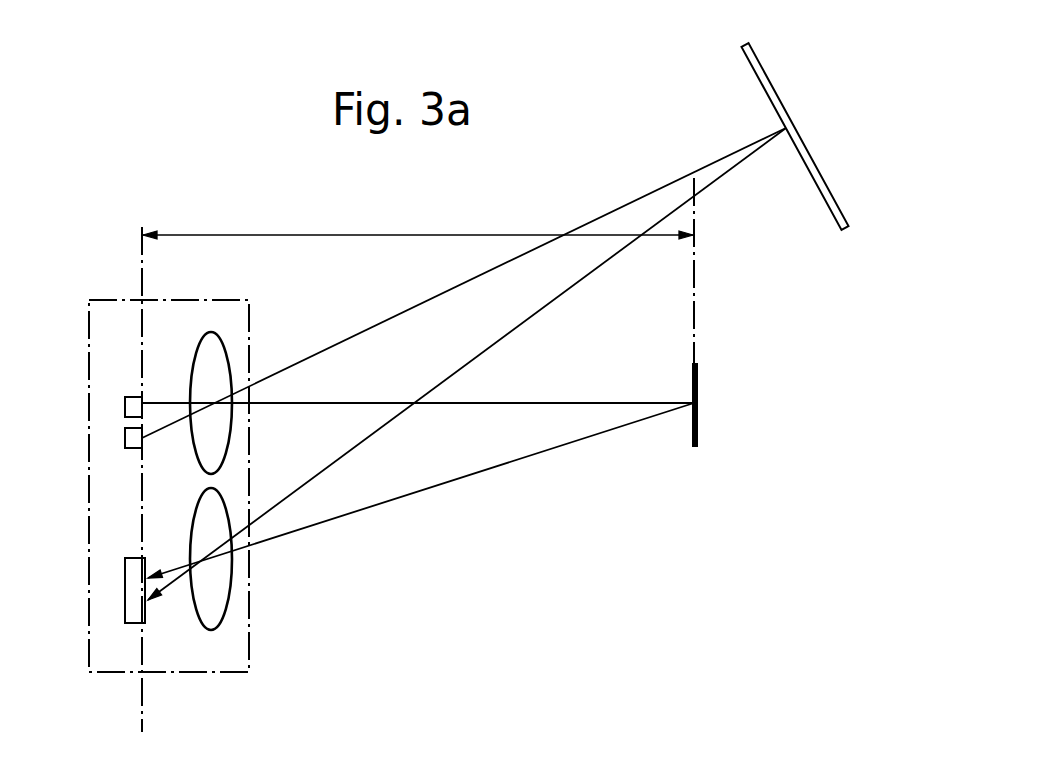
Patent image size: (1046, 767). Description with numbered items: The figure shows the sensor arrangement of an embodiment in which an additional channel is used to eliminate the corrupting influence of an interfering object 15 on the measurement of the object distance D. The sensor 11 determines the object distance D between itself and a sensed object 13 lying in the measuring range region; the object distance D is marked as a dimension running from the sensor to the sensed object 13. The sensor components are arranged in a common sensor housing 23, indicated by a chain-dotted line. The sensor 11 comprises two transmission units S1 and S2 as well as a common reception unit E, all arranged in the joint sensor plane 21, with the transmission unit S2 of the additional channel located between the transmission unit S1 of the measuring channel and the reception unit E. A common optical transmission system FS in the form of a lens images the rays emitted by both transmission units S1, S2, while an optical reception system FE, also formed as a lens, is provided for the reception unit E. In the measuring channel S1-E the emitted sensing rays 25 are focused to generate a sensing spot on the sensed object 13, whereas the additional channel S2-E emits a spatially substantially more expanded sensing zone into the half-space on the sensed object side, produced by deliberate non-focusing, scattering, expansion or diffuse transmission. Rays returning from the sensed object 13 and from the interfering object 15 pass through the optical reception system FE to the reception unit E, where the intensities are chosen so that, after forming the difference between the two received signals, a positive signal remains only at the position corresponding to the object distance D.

The sensor 11 is at (179, 470).
The sensed object 13 is at (697, 393).
The interfering object 15 is at (824, 177).
The joint sensor plane 21 is at (142, 686).
The sensor housing 23 is at (250, 650).
The sensing rays 25 is at (523, 403).
The object distance D is at (417, 235).
The reception unit E is at (125, 597).
The optical reception system FE is at (215, 594).
The optical transmission system FS is at (215, 358).
The transmission unit S1 is at (125, 407).
The transmission unit S2 is at (125, 438).